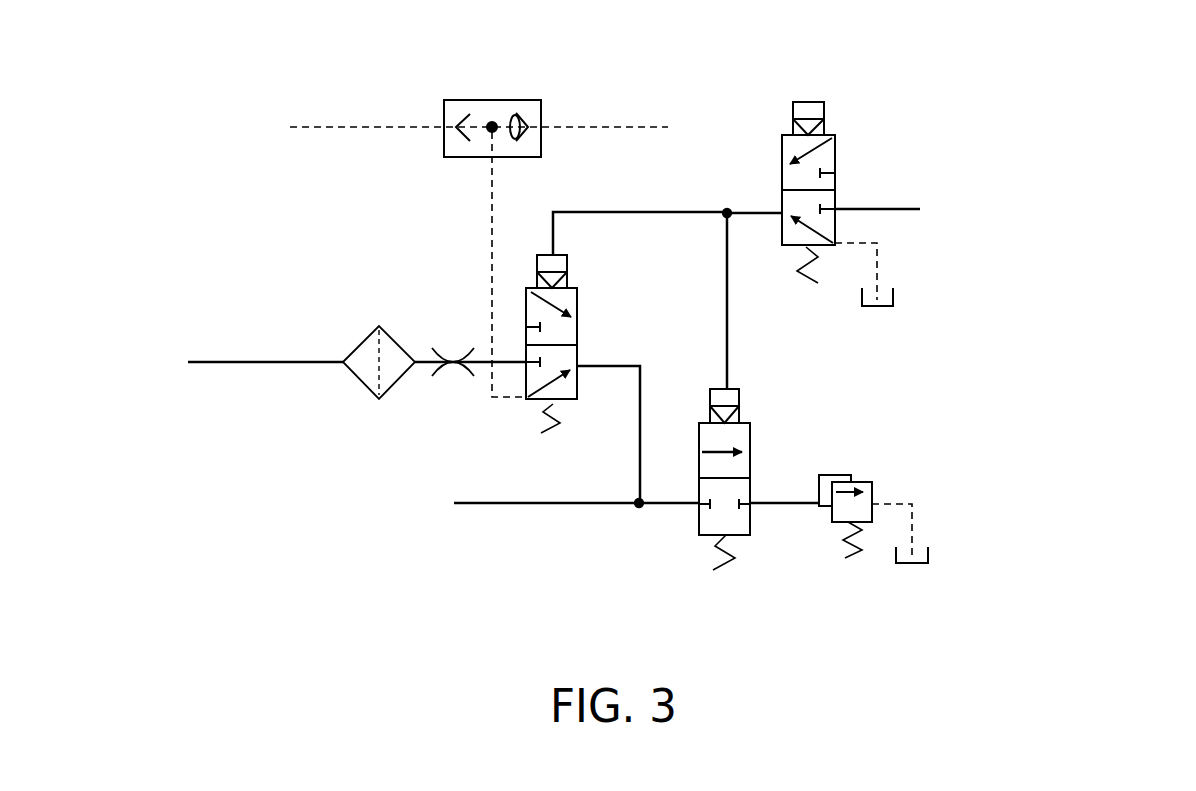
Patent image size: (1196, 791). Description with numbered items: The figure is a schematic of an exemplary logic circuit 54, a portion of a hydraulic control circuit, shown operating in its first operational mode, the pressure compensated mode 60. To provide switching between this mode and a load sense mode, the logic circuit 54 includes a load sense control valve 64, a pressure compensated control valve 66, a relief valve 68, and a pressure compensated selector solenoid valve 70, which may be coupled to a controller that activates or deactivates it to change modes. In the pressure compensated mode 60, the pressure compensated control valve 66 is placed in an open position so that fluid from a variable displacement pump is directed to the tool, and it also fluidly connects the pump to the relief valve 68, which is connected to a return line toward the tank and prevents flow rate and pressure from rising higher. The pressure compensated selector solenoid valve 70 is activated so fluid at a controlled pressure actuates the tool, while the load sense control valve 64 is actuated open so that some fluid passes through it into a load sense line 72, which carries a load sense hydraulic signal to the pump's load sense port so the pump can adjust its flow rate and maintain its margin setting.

The logic circuit 54 is at (1060, 130).
The pressure compensated mode 60 is at (585, 502).
The load sense control valve 64 is at (573, 288).
The pressure compensated control valve 66 is at (745, 423).
The relief valve 68 is at (858, 480).
The pressure compensated selector solenoid valve 70 is at (828, 135).
The load sense line 72 is at (218, 362).